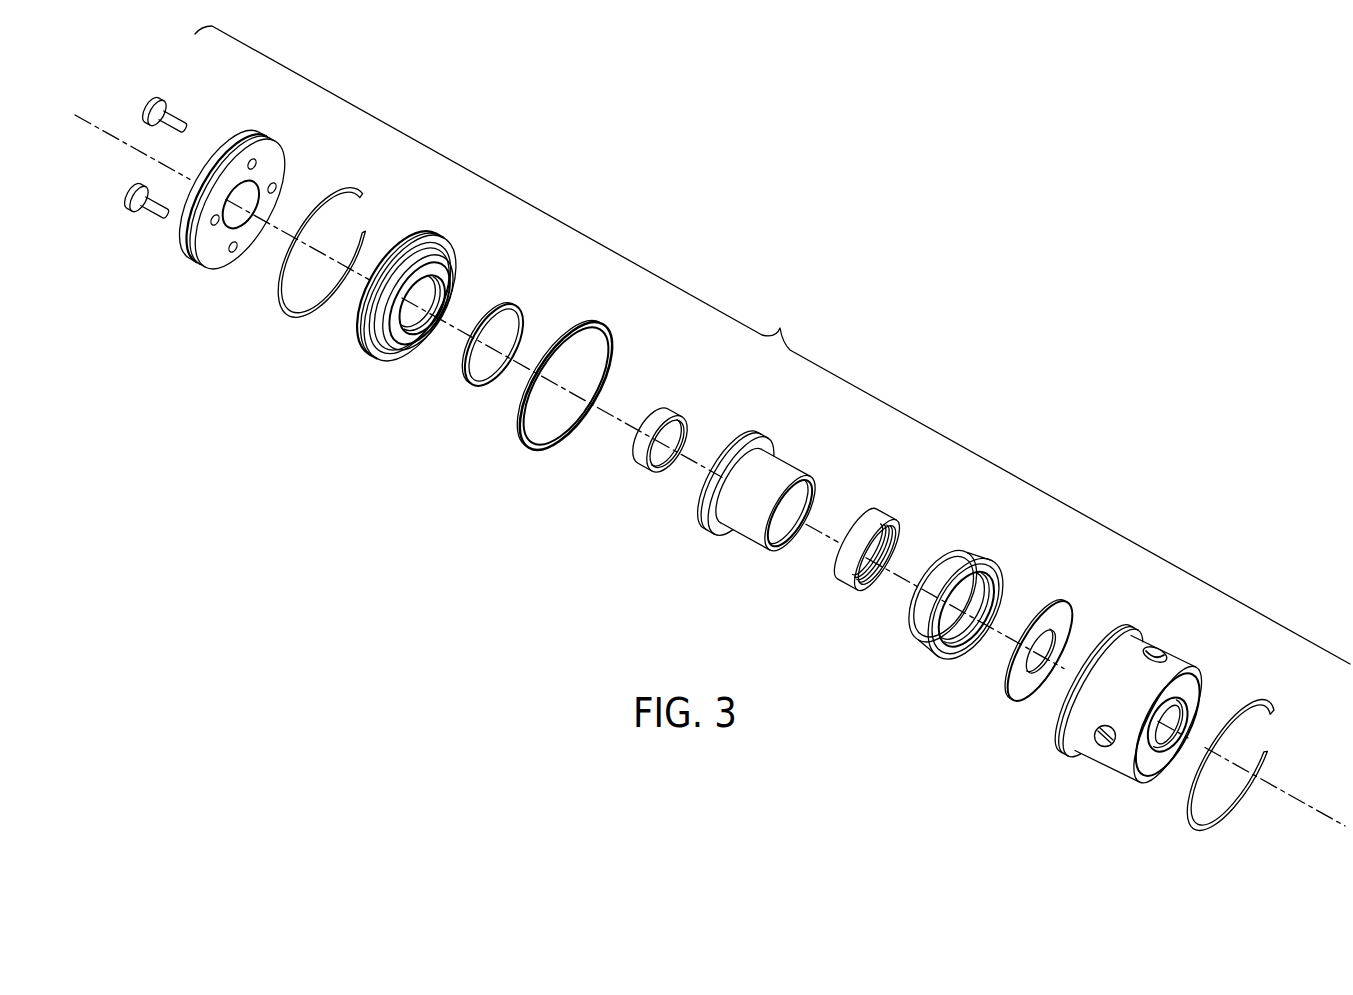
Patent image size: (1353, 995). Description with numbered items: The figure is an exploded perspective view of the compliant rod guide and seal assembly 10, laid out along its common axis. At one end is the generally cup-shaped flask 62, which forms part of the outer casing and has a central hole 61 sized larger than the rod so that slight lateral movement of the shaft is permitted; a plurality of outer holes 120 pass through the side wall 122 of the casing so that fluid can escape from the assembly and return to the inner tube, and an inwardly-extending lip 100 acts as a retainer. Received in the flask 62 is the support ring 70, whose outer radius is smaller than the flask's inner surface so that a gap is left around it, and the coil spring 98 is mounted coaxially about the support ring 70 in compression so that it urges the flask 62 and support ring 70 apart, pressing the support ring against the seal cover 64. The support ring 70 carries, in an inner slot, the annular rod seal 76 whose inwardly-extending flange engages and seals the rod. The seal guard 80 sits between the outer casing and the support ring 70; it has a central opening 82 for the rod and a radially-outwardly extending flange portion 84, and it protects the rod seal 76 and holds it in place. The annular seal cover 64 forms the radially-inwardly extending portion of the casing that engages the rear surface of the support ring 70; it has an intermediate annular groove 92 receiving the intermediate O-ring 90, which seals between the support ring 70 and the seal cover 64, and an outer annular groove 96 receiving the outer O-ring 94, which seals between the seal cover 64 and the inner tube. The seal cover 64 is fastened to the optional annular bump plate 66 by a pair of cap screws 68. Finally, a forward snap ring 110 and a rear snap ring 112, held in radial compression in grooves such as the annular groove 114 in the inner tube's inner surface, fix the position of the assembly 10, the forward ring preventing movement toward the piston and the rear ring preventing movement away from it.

The rod guide and seal assembly 10 is at (772, 345).
The central hole 61 is at (1172, 726).
The flask 62 is at (1125, 650).
The seal cover 64 is at (358, 338).
The bump plate 66 is at (214, 258).
The cap screws 68 is at (172, 112).
The support ring 70 is at (788, 470).
The rod seal 76 is at (845, 580).
The seal guard 80 is at (1073, 604).
The central opening 82 is at (1038, 627).
The flange portion 84 is at (1035, 700).
The O-ring 90 is at (475, 385).
The intermediate annular groove 92 is at (433, 270).
The O-ring 94 is at (605, 332).
The outer annular groove 96 is at (378, 358).
The coil spring 98 is at (973, 558).
The lip 100 is at (1153, 773).
The forward snap ring 110 is at (1278, 718).
The rear snap ring 112 is at (343, 187).
The annular groove 114 is at (645, 460).
The outer holes 120 is at (1162, 647).
The side wall 122 is at (1099, 737).